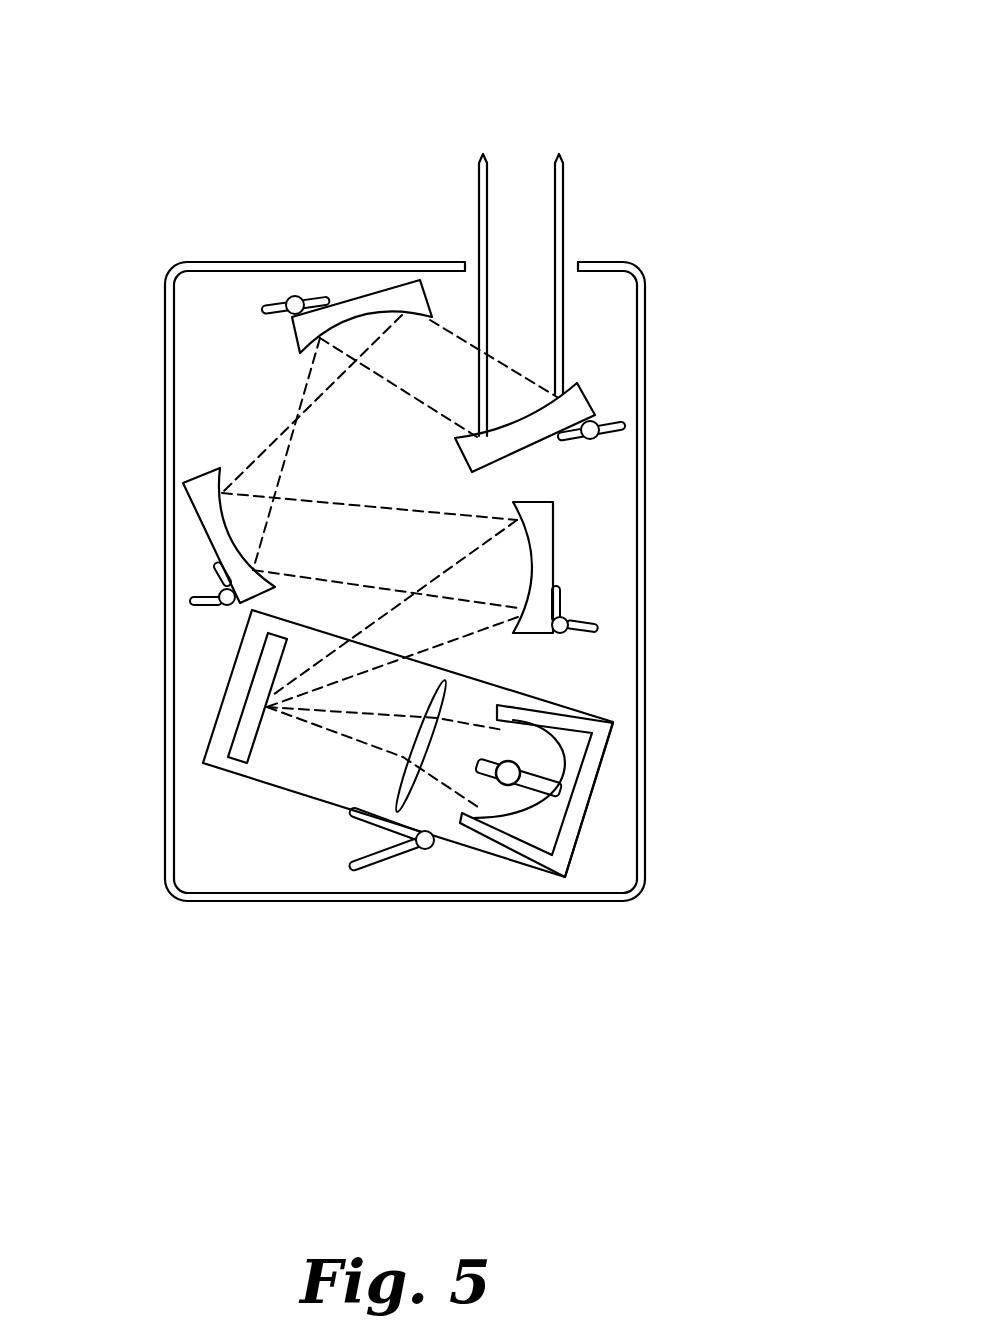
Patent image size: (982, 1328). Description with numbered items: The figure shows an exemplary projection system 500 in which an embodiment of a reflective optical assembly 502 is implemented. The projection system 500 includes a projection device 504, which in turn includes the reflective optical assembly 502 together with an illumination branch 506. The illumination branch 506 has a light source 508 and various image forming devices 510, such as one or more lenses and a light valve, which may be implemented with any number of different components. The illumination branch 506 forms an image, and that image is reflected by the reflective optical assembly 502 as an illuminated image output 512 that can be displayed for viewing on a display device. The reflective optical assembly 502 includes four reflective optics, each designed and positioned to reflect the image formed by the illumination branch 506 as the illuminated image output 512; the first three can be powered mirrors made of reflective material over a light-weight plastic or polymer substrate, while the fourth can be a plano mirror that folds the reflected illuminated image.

The projection system 500 is at (566, 74).
The reflective optical assembly 502 is at (212, 353).
The projection device 504 is at (417, 263).
The illumination branch 506 is at (327, 803).
The light source 508 is at (513, 700).
The image forming devices 510 is at (297, 762).
The illuminated image output 512 is at (563, 217).